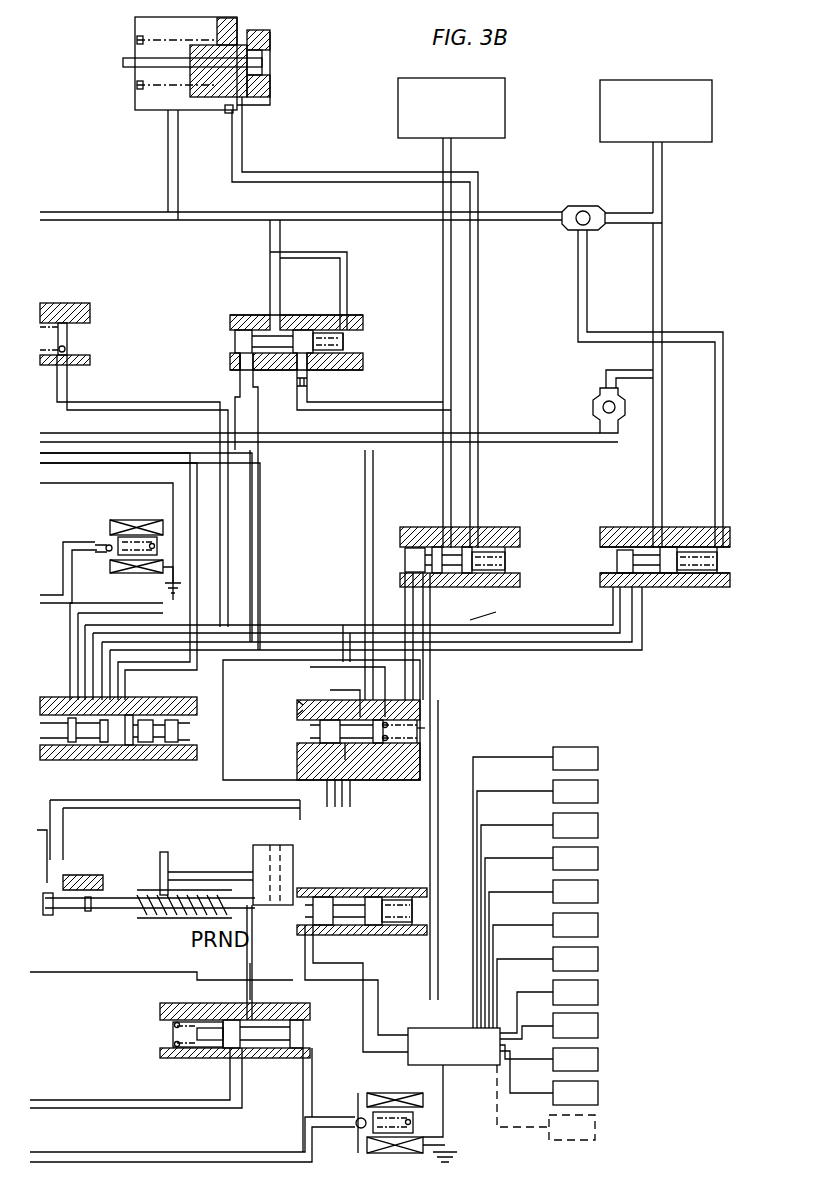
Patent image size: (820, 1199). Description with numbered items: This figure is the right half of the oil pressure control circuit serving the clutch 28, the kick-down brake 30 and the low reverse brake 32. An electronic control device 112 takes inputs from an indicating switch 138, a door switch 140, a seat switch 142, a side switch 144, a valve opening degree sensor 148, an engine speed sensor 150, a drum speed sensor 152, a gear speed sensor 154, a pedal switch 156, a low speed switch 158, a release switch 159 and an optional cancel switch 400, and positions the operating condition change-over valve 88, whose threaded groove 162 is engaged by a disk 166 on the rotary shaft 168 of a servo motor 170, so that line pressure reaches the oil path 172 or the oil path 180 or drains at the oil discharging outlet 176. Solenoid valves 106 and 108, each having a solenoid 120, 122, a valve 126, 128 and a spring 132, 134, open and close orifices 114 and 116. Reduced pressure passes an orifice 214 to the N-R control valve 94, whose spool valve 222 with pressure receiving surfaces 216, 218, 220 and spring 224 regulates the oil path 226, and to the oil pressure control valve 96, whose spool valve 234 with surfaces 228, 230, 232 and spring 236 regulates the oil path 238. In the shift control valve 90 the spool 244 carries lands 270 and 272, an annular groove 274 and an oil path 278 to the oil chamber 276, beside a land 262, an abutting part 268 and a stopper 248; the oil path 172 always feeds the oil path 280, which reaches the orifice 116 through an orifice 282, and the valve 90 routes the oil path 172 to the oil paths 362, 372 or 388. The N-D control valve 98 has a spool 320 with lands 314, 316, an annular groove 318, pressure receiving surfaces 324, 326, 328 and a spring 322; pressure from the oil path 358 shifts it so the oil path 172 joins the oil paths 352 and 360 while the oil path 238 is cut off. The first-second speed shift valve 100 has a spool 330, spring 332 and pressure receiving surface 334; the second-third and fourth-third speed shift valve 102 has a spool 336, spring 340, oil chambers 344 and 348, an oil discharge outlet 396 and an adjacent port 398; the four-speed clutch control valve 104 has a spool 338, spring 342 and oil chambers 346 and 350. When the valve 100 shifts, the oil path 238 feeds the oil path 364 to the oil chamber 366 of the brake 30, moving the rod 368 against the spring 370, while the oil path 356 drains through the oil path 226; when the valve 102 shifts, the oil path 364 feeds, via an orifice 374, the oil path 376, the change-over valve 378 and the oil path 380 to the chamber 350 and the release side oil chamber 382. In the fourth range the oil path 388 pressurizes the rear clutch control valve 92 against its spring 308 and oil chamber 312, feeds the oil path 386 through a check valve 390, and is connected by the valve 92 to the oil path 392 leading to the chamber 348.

The clutch 28 is at (600, 108).
The kick down brake 30 is at (190, 114).
The low reverse brake 32 is at (398, 105).
The operating condition change-over valve 88 is at (70, 878).
The shift control valve 90 is at (128, 741).
The rear clutch control valve 92 is at (85, 315).
The N-R control valve 94 is at (243, 1055).
The oil pressure control valve 96 is at (381, 947).
The N-D control valve 98 is at (366, 734).
The first-second speed shift valve 100 is at (468, 589).
The second-third speed and fourth-third speed shift valve 102 is at (286, 355).
The four-speed clutch control valve 104 is at (673, 551).
The solenoid valve 106 is at (415, 1122).
The solenoid valve 108 is at (110, 542).
The electronic control device 112 is at (454, 1046).
The orifice 114 is at (355, 1127).
The orifice 116 is at (100, 553).
The solenoid 120 is at (423, 1132).
The solenoid 122 is at (145, 520).
The valve 126 is at (376, 1115).
The valve 128 is at (118, 540).
The spring 132 is at (403, 1118).
The spring 134 is at (157, 565).
The advancement direction indicating switch 138 is at (598, 758).
The door switch 140 is at (598, 791).
The seat switch 142 is at (598, 825).
The side switch 144 is at (598, 858).
The valve opening degree sensor 148 is at (598, 892).
The engine speed sensor 150 is at (598, 925).
The drum speed sensor 152 is at (598, 959).
The gear speed sensor 154 is at (598, 992).
The pedal switch 156 is at (598, 1026).
The low speed switch 158 is at (598, 1059).
The release switch 159 is at (598, 1093).
The threaded groove 162 is at (155, 918).
The disk 166 is at (168, 860).
The rotary shaft 168 is at (222, 872).
The servo motor 170 is at (265, 845).
The oil path 172 is at (52, 800).
The oil discharging outlet 176 is at (97, 898).
The oil path 180 is at (210, 1108).
The orifice 214 is at (300, 1148).
The pressure receiving surface 216 is at (305, 1035).
The pressure receiving surface 218 is at (255, 1050).
The pressure receiving surface 220 is at (210, 1045).
The spool valve 222 is at (247, 995).
The spring 224 is at (185, 1050).
The oil path 226 is at (440, 745).
The pressure receiving surface 228 is at (313, 897).
The pressure receiving surface 230 is at (330, 935).
The pressure receiving surface 232 is at (380, 935).
The spool valve 234 is at (385, 897).
The spring 236 is at (414, 912).
The oil path 238 is at (112, 402).
The spool 244 is at (145, 742).
The stopper 248 is at (110, 745).
The land 262 is at (68, 845).
The abutting part 268 is at (80, 745).
The land 270 is at (130, 715).
The land 272 is at (180, 745).
The annular groove 274 is at (172, 720).
The oil chamber 276 is at (297, 745).
The oil path 278 is at (297, 712).
The oil path 280 is at (56, 570).
The orifice 282 is at (70, 630).
The spring 308 is at (67, 348).
The oil chamber 312 is at (67, 328).
The land 314 is at (320, 725).
The land 316 is at (385, 722).
The annular groove 318 is at (360, 718).
The spool 320 is at (320, 732).
The spring 322 is at (418, 728).
The pressure receiving surface 324 is at (312, 742).
The pressure receiving surface 326 is at (350, 745).
The pressure receiving surface 328 is at (350, 800).
The spool 330 is at (425, 547).
The spring 332 is at (506, 560).
The pressure receiving surface 334 is at (400, 548).
The spool 336 is at (285, 330).
The spool 338 is at (660, 575).
The spring 340 is at (330, 353).
The spring 342 is at (700, 575).
The oil chamber 344 is at (232, 326).
The oil chamber 346 is at (615, 550).
The oil chamber 348 is at (345, 335).
The oil chamber 350 is at (718, 560).
The oil path 352 is at (365, 565).
The oil path 356 is at (443, 160).
The oil path 358 is at (330, 690).
The oil path 360 is at (310, 660).
The oil path 362 is at (125, 625).
The oil path 364 is at (322, 182).
The oil chamber 366 is at (238, 110).
The rod 368 is at (132, 70).
The spring 370 is at (148, 28).
The oil path 372 is at (258, 507).
The orifice 374 is at (297, 395).
The oil path 376 is at (432, 212).
The change-over valve 378 is at (582, 208).
The oil path 380 is at (578, 283).
The release side oil chamber 382 is at (148, 112).
The oil path 386 is at (662, 284).
The oil path 388 is at (512, 433).
The check valve 390 is at (600, 402).
The oil path 392 is at (347, 252).
The oil discharge outlet 396 is at (240, 352).
The port 398 is at (245, 365).
The cancel switch 400 is at (595, 1127).